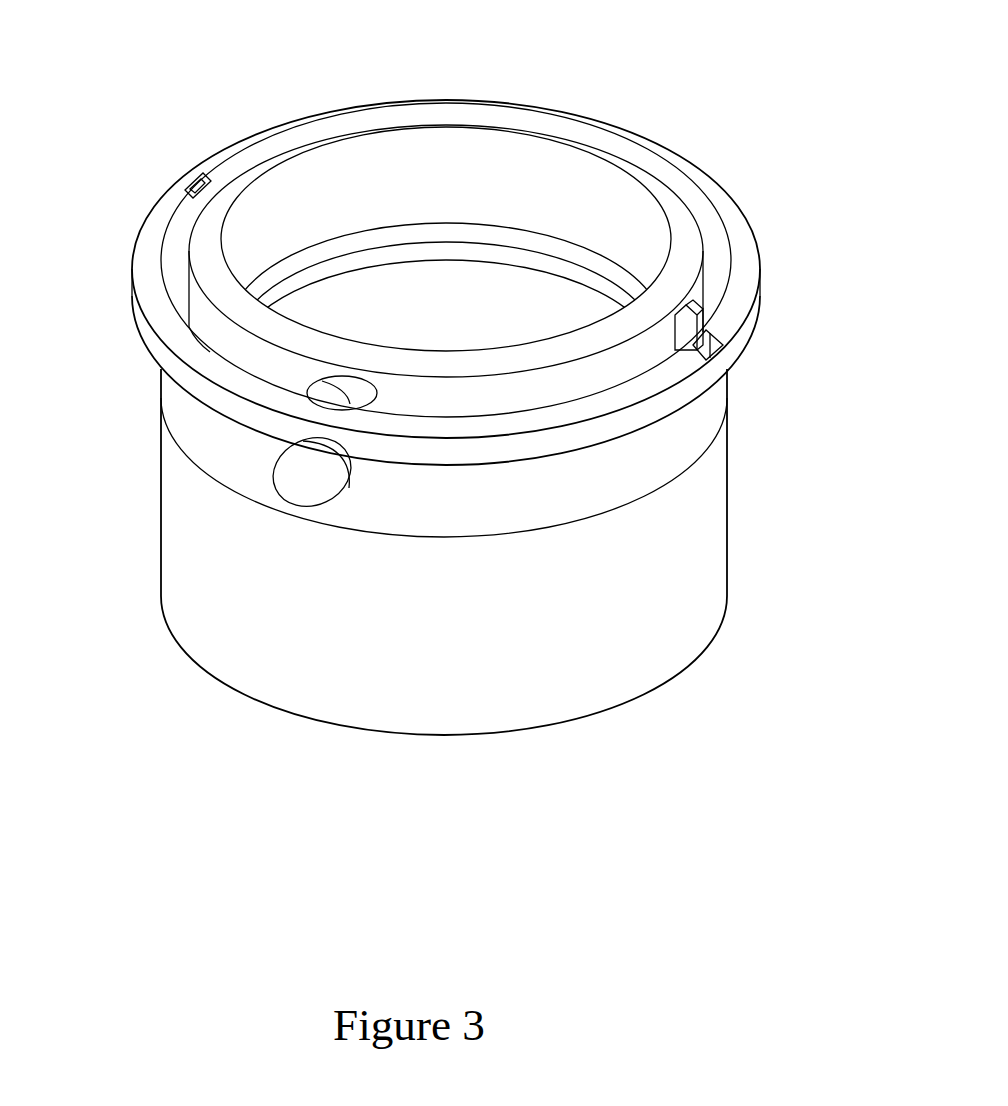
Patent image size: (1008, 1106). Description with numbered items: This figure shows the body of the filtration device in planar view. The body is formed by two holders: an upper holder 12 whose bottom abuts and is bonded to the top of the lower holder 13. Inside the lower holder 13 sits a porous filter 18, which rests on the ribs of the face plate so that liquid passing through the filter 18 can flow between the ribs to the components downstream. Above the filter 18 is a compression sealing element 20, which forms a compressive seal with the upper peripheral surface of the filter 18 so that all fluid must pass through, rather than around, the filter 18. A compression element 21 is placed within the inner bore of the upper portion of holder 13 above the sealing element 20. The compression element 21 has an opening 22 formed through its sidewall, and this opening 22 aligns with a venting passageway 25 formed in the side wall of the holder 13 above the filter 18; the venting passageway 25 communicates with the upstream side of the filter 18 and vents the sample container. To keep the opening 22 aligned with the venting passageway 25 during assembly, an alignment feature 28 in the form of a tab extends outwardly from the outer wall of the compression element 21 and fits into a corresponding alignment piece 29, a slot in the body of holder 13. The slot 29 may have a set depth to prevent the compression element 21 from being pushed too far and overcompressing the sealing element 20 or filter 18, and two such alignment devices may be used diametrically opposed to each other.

The holder 12 is at (708, 411).
The holder 13 is at (712, 485).
The filter 18 is at (481, 277).
The compression sealing element 20 is at (562, 262).
The compression element 21 is at (623, 152).
The opening 22 is at (342, 396).
The venting passageway 25 is at (292, 475).
The alignment feature 28 is at (703, 302).
The alignment piece 29 is at (723, 335).